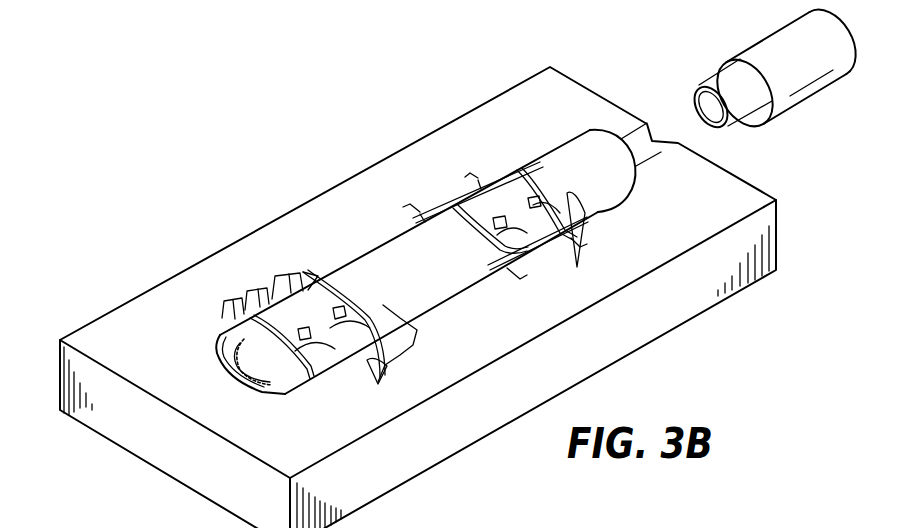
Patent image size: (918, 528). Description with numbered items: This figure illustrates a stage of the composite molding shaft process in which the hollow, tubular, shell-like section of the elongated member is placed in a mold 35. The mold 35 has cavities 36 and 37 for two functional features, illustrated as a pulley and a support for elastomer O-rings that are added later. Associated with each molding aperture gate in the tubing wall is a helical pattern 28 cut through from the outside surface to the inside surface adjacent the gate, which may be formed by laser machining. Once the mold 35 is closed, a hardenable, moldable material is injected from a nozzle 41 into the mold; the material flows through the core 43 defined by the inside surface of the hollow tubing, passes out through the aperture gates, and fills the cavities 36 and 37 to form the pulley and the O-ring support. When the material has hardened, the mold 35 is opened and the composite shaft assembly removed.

The helical pattern 28 is at (424, 289).
The mold 35 is at (745, 203).
The cavity 36 is at (473, 184).
The cavity 37 is at (256, 293).
The nozzle 41 is at (742, 106).
The core 43 is at (653, 134).